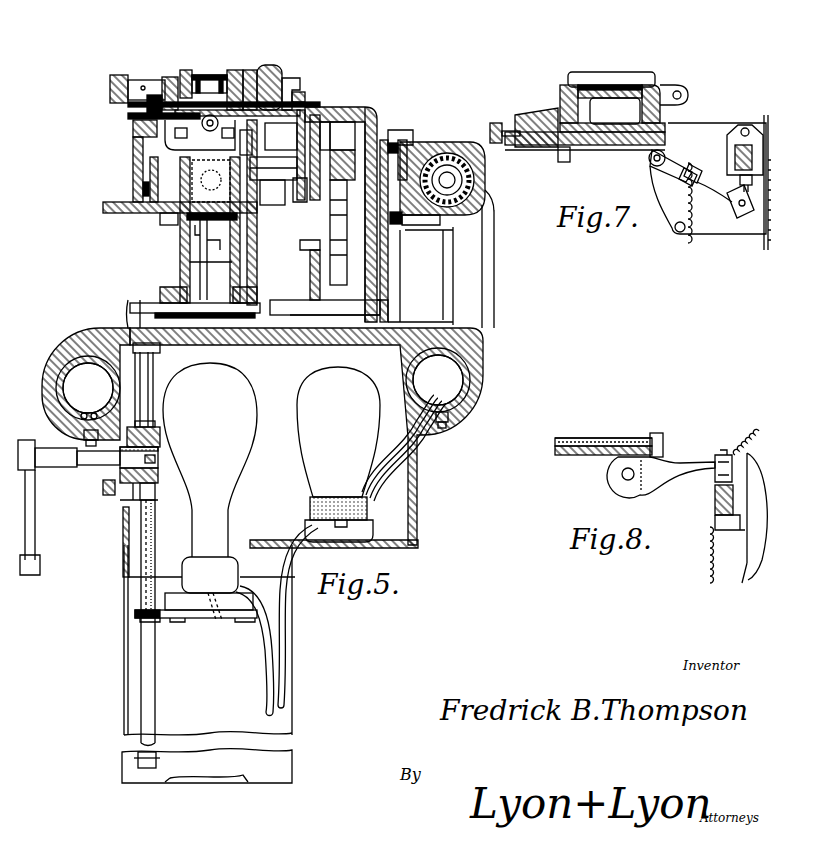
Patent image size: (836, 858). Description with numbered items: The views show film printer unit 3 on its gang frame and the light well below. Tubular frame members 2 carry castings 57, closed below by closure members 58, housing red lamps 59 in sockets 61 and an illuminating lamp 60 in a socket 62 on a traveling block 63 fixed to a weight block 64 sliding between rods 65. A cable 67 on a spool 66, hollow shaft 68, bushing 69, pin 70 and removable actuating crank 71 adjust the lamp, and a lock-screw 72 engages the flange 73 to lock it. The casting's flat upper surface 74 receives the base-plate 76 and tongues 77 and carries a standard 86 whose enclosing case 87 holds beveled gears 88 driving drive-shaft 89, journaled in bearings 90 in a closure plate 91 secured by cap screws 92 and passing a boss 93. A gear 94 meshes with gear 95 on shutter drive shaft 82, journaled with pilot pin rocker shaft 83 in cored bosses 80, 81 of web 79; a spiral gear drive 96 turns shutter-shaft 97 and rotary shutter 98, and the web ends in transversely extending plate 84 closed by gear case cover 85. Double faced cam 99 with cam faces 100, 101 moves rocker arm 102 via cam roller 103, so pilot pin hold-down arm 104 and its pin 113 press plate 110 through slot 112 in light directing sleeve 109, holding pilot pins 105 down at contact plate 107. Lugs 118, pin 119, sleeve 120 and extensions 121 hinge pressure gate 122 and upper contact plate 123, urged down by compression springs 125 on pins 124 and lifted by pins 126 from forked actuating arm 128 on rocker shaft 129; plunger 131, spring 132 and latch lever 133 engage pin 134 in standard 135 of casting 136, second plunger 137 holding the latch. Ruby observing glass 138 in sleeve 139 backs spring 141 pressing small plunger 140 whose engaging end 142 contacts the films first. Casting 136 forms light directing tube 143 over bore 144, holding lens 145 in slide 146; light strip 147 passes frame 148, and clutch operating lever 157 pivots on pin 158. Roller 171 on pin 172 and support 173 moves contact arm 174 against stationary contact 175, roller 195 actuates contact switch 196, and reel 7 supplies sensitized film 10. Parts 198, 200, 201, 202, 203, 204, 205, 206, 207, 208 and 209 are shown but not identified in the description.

In FIG. 5, the tubular frame members 2 is at (60, 388).
In FIG. 5, the film printer unit 3 is at (486, 339).
In FIG. 7, the film printer unit 3 is at (766, 118).
In FIG. 8, the film printer unit 3 is at (748, 575).
In FIG. 7, the reel 7 is at (585, 127).
In FIG. 7, the sensitized film 10 is at (625, 98).
In FIG. 5, the casting 57 is at (124, 545).
In FIG. 5, the closure member 58 is at (125, 655).
In FIG. 5, the red lamp 59 is at (310, 452).
In FIG. 5, the illuminating lamp 60 is at (250, 438).
In FIG. 5, the socket 61 is at (380, 530).
In FIG. 5, the socket 62 is at (225, 575).
In FIG. 5, the traveling block 63 is at (195, 618).
In FIG. 5, the weight block 64 is at (140, 590).
In FIG. 5, the rods 65 is at (155, 690).
In FIG. 5, the spool 66 is at (158, 480).
In FIG. 5, the cable 67 is at (155, 497).
In FIG. 5, the hollow shaft 68 is at (160, 440).
In FIG. 5, the bushing 69 is at (148, 430).
In FIG. 5, the pin 70 is at (158, 460).
In FIG. 5, the actuating crank 71 is at (52, 462).
In FIG. 5, the lock-screw 72 is at (104, 488).
In FIG. 5, the outwardly turned flange 73 is at (95, 458).
In FIG. 5, the flat upper surface 74 is at (395, 325).
In FIG. 5, the base-plate 76 is at (245, 345).
In FIG. 5, the tongues 77 is at (199, 7).
In FIG. 5, the web 79 is at (312, 275).
In FIG. 5, the cored boss 80 is at (308, 255).
In FIG. 5, the cored boss 81 is at (342, 151).
In FIG. 5, the shutter drive shaft 82 is at (308, 348).
In FIG. 5, the pilot pin rocker shaft 83 is at (398, 150).
In FIG. 5, the transversely extending plate 84 is at (345, 108).
In FIG. 5, the gear case cover 85 is at (382, 262).
In FIG. 5, the standard 86 is at (484, 280).
In FIG. 5, the enclosing case 87 is at (480, 205).
In FIG. 5, the beveled gears 88 is at (425, 215).
In FIG. 5, the drive-shaft 89 is at (440, 145).
In FIG. 5, the bearings 90 is at (395, 218).
In FIG. 5, the closure plate 91 is at (405, 225).
In FIG. 5, the cap screws 92 is at (405, 140).
In FIG. 5, the boss 93 is at (389, 141).
In FIG. 5, the gear 94 is at (372, 112).
In FIG. 5, the gear 95 is at (338, 260).
In FIG. 5, the spiral gear drive 96 is at (211, 253).
In FIG. 5, the shutter-shaft 97 is at (235, 272).
In FIG. 5, the rotary shutter 98 is at (345, 340).
In FIG. 5, the double faced cam 99 is at (208, 228).
In FIG. 5, the cam face 100 is at (272, 177).
In FIG. 5, the cam face 101 is at (284, 192).
In FIG. 5, the rocker arm 102 is at (246, 142).
In FIG. 5, the cam roller 103 is at (285, 155).
In FIG. 5, the pilot pin hold-down arm 104 is at (165, 179).
In FIG. 5, the pilot pins 105 is at (205, 75).
In FIG. 5, the contact plate 107 is at (295, 90).
In FIG. 5, the light directing sleeve 109 is at (135, 150).
In FIG. 5, the plate 110 is at (135, 225).
In FIG. 5, the slot 112 is at (218, 242).
In FIG. 5, the pin 113 is at (195, 181).
In FIG. 5, the lugs 118 is at (292, 98).
In FIG. 5, the pin 119 is at (295, 80).
In FIG. 5, the sleeve 120 is at (300, 92).
In FIG. 5, the extensions 121 is at (266, 65).
In FIG. 5, the pressure gate 122 is at (168, 77).
In FIG. 5, the upper contact plate 123 is at (132, 105).
In FIG. 5, the pins 124 is at (252, 70).
In FIG. 5, the compression springs 125 is at (285, 75).
In FIG. 5, the pins 126 is at (305, 105).
In FIG. 5, the forked actuating arm 128 is at (135, 140).
In FIG. 5, the rocker shaft 129 is at (319, 157).
In FIG. 5, the plunger 131 is at (140, 76).
In FIG. 5, the compression spring 132 is at (160, 75).
In FIG. 5, the latch lever 133 is at (133, 130).
In FIG. 5, the pin 134 is at (133, 124).
In FIG. 5, the standard 135 is at (130, 120).
In FIG. 5, the casting 136 is at (103, 208).
In FIG. 5, the second spring pressed plunger 137 is at (143, 188).
In FIG. 5, the observing glass 138 is at (210, 75).
In FIG. 5, the sleeve 139 is at (175, 75).
In FIG. 5, the small plunger 140 is at (222, 75).
In FIG. 5, the compression spring 141 is at (215, 75).
In FIG. 5, the engaging end 142 is at (200, 135).
In FIG. 5, the light directing tube 143 is at (178, 262).
In FIG. 5, the bore 144 is at (150, 350).
In FIG. 5, the lens 145 is at (200, 240).
In FIG. 5, the slide 146 is at (105, 212).
In FIG. 5, the light strip 147 is at (178, 245).
In FIG. 8, the light strip 147 is at (605, 440).
In FIG. 5, the frame 148 is at (165, 222).
In FIG. 8, the frame 148 is at (575, 440).
In FIG. 5, the clutch operating lever 157 is at (170, 230).
In FIG. 5, the pin 158 is at (165, 238).
In FIG. 7, the roller 171 is at (665, 150).
In FIG. 7, the pin 172 is at (655, 170).
In FIG. 7, the support 173 is at (700, 135).
In FIG. 7, the contact arm 174 is at (730, 200).
In FIG. 7, the stationary contact 175 is at (755, 235).
In FIG. 8, the roller 195 is at (665, 445).
In FIG. 8, the contact switch 196 is at (713, 485).
In FIG. 7, the block 198 is at (565, 148).
In FIG. 7, the body 200 is at (615, 100).
In FIG. 7, the wall 201 is at (585, 85).
In FIG. 7, the lug 202 is at (683, 92).
In FIG. 7, the knob 203 is at (535, 142).
In FIG. 7, the plate 204 is at (625, 148).
In FIG. 7, the plate 205 is at (655, 82).
In FIG. 7, the strip 206 is at (640, 87).
In FIG. 7, the plate 207 is at (600, 148).
In FIG. 7, the cap 208 is at (600, 72).
In FIG. 7, the wedge 209 is at (530, 110).